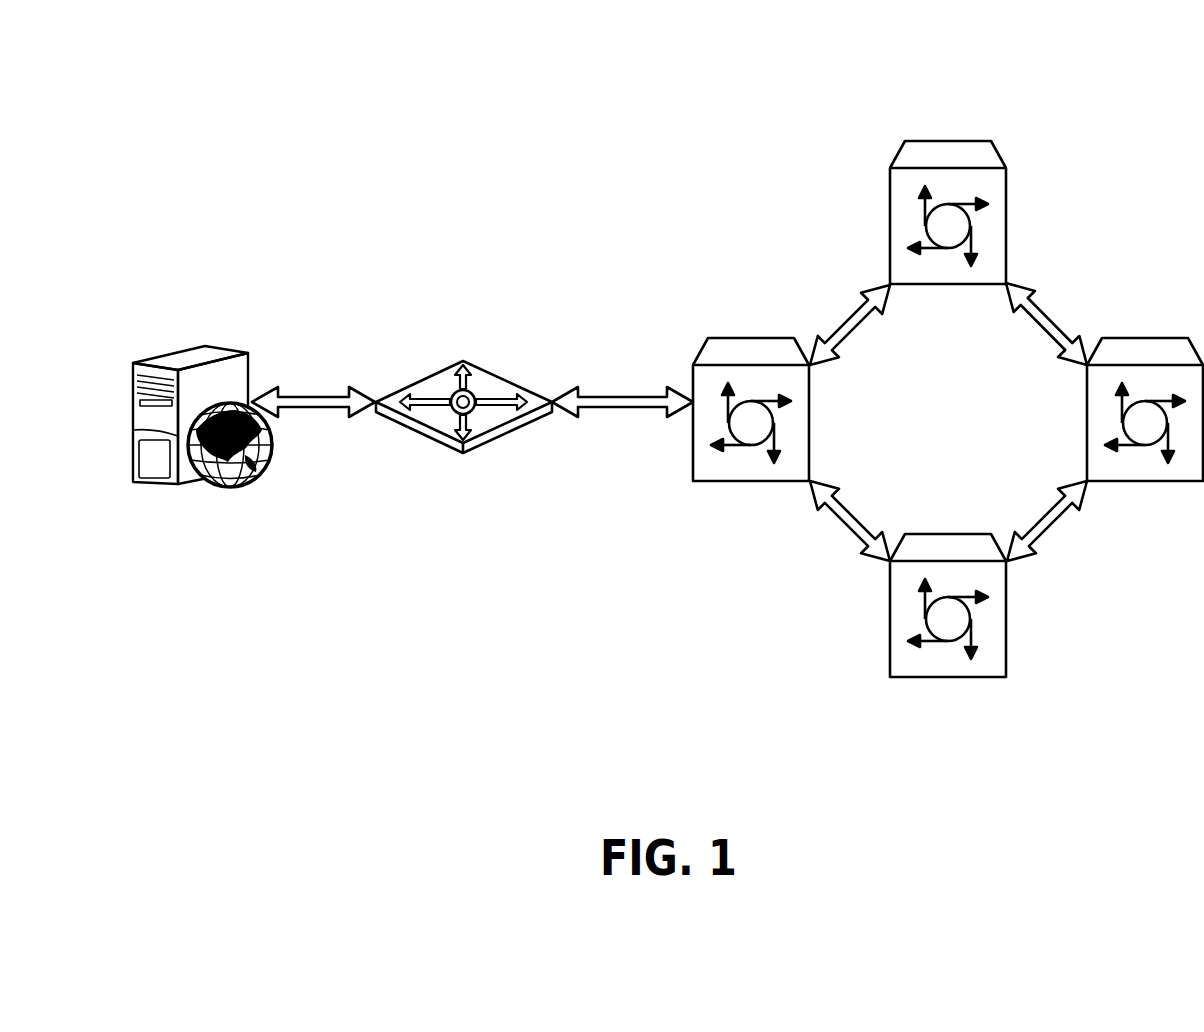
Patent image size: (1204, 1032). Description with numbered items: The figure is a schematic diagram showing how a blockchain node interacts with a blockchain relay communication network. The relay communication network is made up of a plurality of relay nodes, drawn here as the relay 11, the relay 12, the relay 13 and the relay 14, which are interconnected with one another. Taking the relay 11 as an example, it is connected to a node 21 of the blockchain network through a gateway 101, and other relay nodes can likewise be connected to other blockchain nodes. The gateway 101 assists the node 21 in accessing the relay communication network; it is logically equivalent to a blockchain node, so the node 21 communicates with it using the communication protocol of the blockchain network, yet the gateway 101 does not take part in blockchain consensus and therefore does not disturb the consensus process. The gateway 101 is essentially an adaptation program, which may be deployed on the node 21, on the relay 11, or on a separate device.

The node 21 is at (222, 350).
The gateway 101 is at (483, 377).
The relay 11 is at (748, 342).
The relay 12 is at (945, 147).
The relay 13 is at (945, 540).
The relay 14 is at (1143, 343).